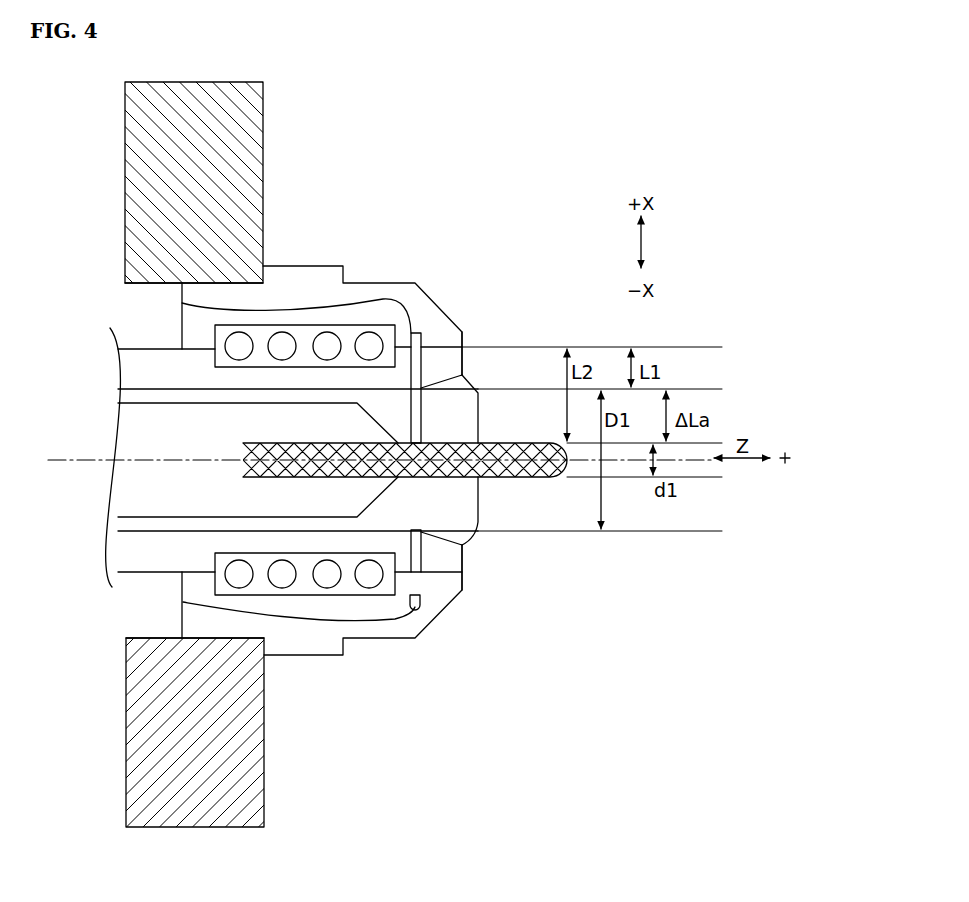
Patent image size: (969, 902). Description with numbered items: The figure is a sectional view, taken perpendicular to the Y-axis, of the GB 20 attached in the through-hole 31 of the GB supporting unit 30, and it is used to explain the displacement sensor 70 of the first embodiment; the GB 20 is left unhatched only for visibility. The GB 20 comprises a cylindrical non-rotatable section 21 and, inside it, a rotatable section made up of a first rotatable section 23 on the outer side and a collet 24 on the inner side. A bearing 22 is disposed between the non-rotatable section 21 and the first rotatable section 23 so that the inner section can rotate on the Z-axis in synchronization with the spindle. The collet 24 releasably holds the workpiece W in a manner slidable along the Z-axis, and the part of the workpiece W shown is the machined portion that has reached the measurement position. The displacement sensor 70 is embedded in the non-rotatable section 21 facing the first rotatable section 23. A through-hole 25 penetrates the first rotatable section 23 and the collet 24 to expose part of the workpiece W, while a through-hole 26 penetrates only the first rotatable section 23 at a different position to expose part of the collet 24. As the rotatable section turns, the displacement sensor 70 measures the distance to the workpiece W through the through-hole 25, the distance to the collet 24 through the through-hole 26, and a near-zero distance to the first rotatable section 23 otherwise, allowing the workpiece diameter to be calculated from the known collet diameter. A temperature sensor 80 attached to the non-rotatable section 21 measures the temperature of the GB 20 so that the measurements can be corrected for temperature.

The GB 20 is at (480, 381).
The non-rotatable section 21 is at (386, 283).
The bearing 22 is at (347, 333).
The first rotatable section 23 is at (140, 368).
The collet 24 is at (476, 425).
The through-hole 25 is at (425, 373).
The through-hole 26 is at (464, 566).
The GB supporting unit 30 is at (265, 224).
The through-hole 31 is at (141, 283).
The displacement sensor 70 is at (422, 337).
The temperature sensor 80 is at (421, 600).
The workpiece W is at (510, 480).